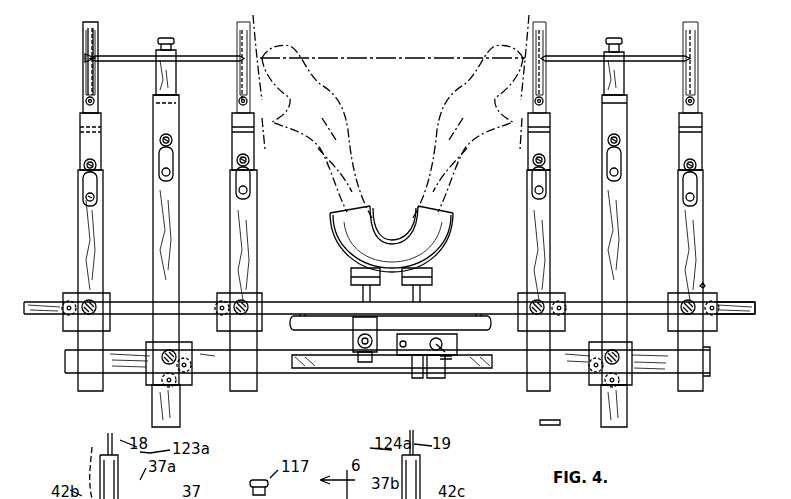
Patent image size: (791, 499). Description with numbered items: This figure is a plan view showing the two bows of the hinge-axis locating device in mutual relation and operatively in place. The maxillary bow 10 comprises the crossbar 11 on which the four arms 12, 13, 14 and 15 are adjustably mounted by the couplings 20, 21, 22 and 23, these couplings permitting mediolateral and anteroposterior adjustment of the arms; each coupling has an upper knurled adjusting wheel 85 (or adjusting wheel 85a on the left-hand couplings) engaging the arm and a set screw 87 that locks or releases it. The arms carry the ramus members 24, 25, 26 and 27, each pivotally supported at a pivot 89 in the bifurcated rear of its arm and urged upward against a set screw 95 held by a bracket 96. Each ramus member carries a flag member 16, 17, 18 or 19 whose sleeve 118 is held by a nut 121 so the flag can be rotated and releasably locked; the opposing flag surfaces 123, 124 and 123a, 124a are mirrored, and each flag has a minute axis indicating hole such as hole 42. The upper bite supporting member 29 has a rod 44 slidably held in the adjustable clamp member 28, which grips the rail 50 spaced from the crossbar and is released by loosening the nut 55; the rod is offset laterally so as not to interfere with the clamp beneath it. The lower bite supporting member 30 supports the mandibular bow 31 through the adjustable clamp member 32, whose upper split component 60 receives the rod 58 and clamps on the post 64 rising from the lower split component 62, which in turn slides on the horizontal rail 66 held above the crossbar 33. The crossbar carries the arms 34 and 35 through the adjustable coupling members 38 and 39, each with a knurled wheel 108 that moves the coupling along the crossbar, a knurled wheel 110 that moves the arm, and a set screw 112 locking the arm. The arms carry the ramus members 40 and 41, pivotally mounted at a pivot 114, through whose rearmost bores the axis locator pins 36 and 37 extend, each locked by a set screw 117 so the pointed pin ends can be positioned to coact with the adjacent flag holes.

The maxillary bow 10 is at (722, 286).
The crossbar 11 is at (735, 319).
The arm 12 is at (78, 276).
The arm 13 is at (230, 276).
The arm 14 is at (550, 272).
The arm 15 is at (703, 252).
The flag member 16 is at (83, 28).
The flag member 17 is at (237, 33).
The flag member 18 is at (546, 28).
The flag member 19 is at (683, 32).
The coupling 20 is at (63, 322).
The coupling 21 is at (265, 322).
The coupling 22 is at (518, 325).
The coupling 23 is at (716, 332).
The ramus member 24 is at (84, 150).
The ramus member 25 is at (236, 150).
The ramus member 26 is at (544, 150).
The ramus member 27 is at (700, 154).
The adjustable clamp member 28 is at (353, 342).
The upper bite supporting member 29 is at (338, 250).
The lower bite supporting member 30 is at (432, 268).
The mandibular bow 31 is at (627, 400).
The adjustable clamp member 32 is at (438, 378).
The crossbar 33 is at (272, 373).
The arm 34 is at (179, 219).
The arm 35 is at (627, 220).
The axis locator pin 36 is at (118, 57).
The axis locator pin 37 is at (566, 57).
The adjustable coupling member 38 is at (182, 385).
The adjustable coupling member 39 is at (592, 385).
The ramus member 40 is at (176, 76).
The ramus member 41 is at (624, 76).
The axis indicating hole 42 is at (90, 57).
The rod 44 is at (360, 296).
The rail 50 is at (460, 316).
The nut 55 is at (361, 350).
The rod 58 is at (428, 296).
The upper split component 60 is at (457, 342).
The lower split component 62 is at (429, 378).
The post 64 is at (450, 364).
The horizontal rail 66 is at (330, 370).
The upper knurled adjusting wheel 85 is at (722, 320).
The adjusting wheel 85a is at (52, 316).
The set screw 87 is at (92, 301).
The pivot 89 is at (100, 130).
The set screw 95 is at (98, 162).
The bracket 96 is at (98, 184).
The knurled wheel 108 is at (622, 388).
The knurled wheel 110 is at (589, 365).
The set screw 112 is at (160, 350).
The pivot 114 is at (176, 108).
The set screw 117 is at (166, 38).
The sleeve 118 is at (85, 92).
The nut 121 is at (97, 103).
The mirrored surface 123 is at (98, 30).
The mirrored surface 123a is at (545, 82).
The mirrored surface 124 is at (235, 52).
The mirrored surface 124a is at (684, 96).